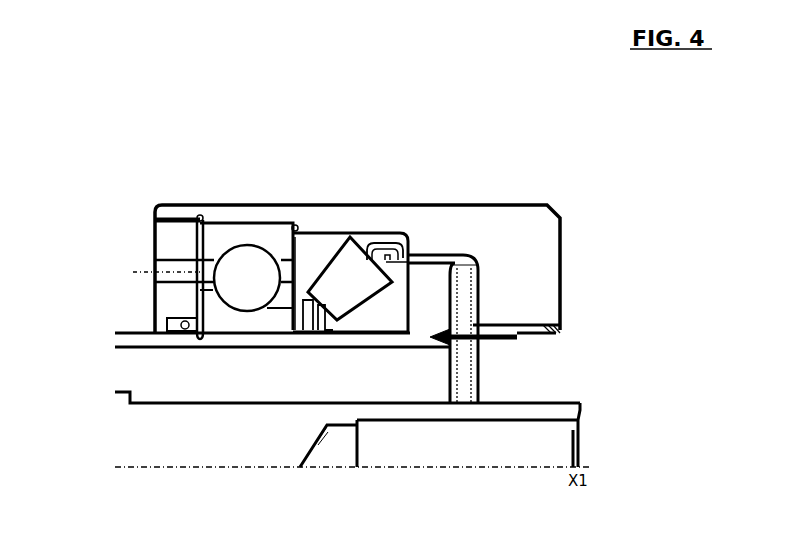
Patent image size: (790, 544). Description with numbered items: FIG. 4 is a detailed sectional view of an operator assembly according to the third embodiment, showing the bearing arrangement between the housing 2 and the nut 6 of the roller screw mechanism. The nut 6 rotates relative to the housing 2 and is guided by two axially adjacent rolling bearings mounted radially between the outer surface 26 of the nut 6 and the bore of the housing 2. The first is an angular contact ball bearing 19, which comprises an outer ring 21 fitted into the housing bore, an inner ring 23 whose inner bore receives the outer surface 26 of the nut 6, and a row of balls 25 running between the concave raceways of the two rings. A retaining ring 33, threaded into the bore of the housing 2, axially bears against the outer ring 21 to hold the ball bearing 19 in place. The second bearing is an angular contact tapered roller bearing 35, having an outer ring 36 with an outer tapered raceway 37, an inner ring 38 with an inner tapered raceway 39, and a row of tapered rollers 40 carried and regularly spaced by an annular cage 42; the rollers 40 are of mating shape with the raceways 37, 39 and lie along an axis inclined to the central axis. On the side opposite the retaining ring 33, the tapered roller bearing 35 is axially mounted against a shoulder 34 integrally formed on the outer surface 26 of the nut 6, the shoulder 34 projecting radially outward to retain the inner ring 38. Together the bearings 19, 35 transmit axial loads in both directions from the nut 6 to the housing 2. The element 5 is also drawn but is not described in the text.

The housing 2 is at (575, 232).
The flange 5 is at (580, 405).
The nut 6 is at (135, 355).
The angular contact ball bearing 19 is at (214, 345).
The outer ring 21 is at (218, 223).
The inner ring 23 is at (178, 298).
The balls 25 is at (258, 287).
The outer surface 26 is at (165, 322).
The retaining ring 33 is at (156, 250).
The shoulder 34 is at (452, 284).
The angular contact tapered roller bearing 35 is at (374, 345).
The outer ring 36 is at (335, 238).
The outer tapered raceway 37 is at (292, 236).
The inner ring 38 is at (433, 252).
The inner tapered raceway 39 is at (343, 322).
The tapered rollers 40 is at (366, 240).
The annular cage 42 is at (394, 240).